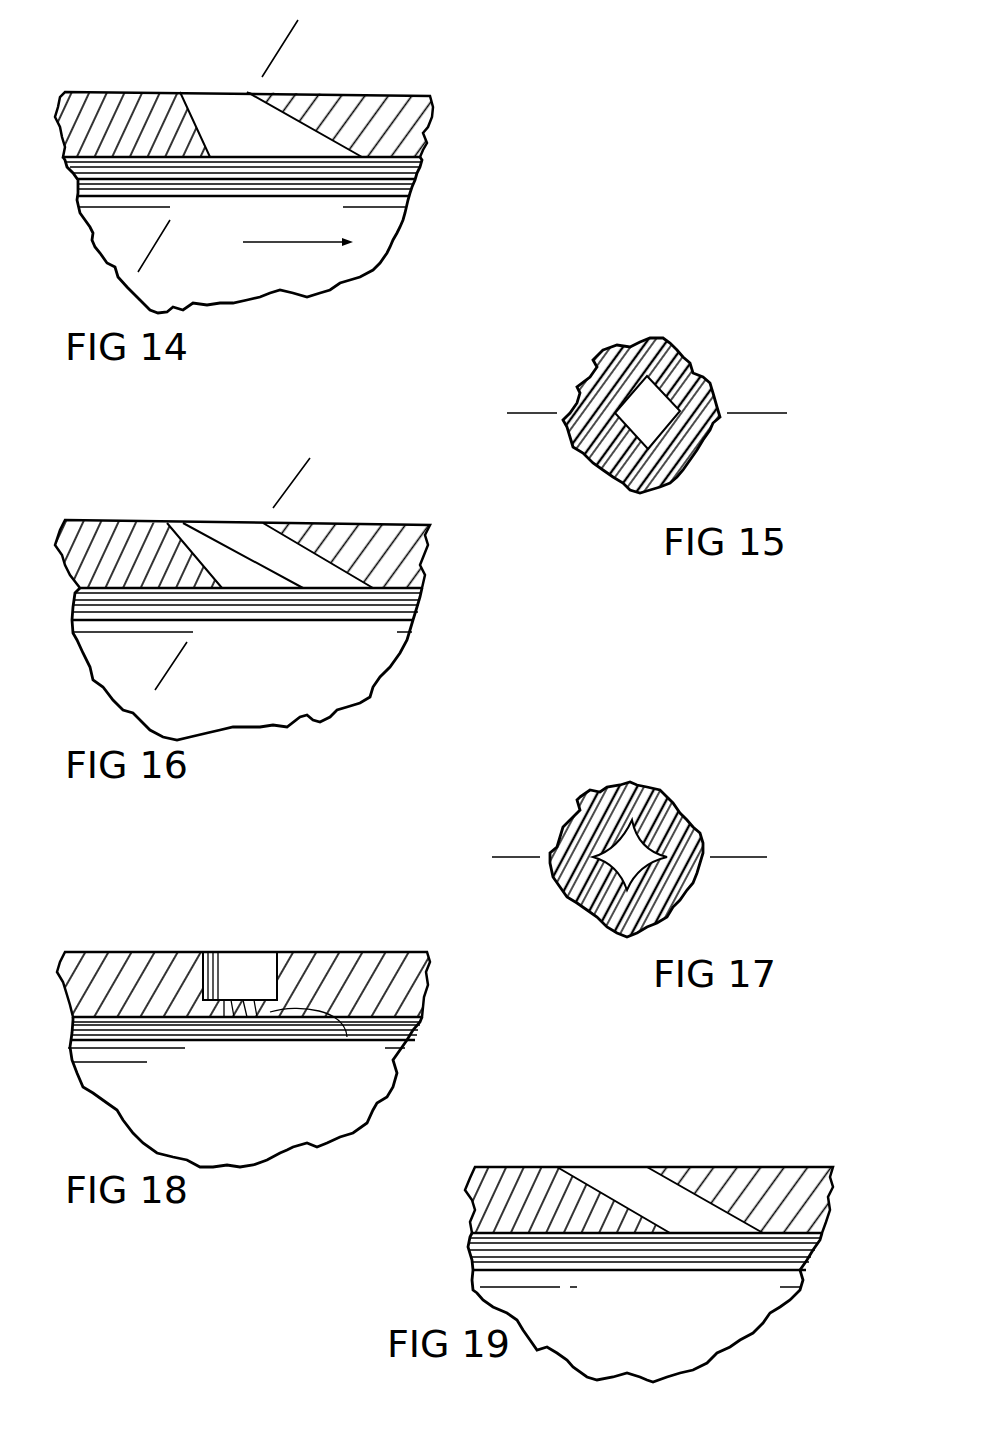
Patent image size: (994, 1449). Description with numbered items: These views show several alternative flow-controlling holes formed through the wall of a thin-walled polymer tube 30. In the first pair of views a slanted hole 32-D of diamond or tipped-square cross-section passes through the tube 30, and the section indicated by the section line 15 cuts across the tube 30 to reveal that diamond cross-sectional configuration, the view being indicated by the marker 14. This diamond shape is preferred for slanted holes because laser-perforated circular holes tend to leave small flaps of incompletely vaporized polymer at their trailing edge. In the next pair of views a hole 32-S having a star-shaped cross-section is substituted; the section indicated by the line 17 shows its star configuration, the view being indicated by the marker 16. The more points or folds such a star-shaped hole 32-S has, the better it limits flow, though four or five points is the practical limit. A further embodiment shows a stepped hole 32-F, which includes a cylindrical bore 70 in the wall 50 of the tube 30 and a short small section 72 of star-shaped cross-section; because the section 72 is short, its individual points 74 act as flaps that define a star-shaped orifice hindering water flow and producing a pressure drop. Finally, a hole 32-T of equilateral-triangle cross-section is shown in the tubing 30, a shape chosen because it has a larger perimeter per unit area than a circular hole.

In FIG. 14, the tube 30 is at (402, 57).
In FIG. 15, the tube 30 is at (790, 338).
In FIG. 16, the tube 30 is at (332, 483).
In FIG. 17, the tube 30 is at (778, 820).
In FIG. 18, the tube 30 is at (407, 927).
In FIG. 19, the tube 30 is at (823, 1132).
In FIG. 14, the wall 50 is at (427, 133).
In FIG. 15, the wall 50 is at (682, 340).
In FIG. 16, the wall 50 is at (423, 572).
In FIG. 17, the wall 50 is at (623, 783).
In FIG. 18, the wall 50 is at (423, 1008).
In FIG. 19, the wall 50 is at (837, 1197).
In FIG. 14, the hole of diamond type cross-sectional configuration 32-D is at (220, 90).
In FIG. 15, the hole of diamond type cross-sectional configuration 32-D is at (657, 428).
In FIG. 16, the hole of star shaped cross-sectional configuration 32-S is at (235, 520).
In FIG. 17, the hole of star shaped cross-sectional configuration 32-S is at (655, 868).
In FIG. 18, the stepped hole 32-F is at (210, 952).
In FIG. 19, the hole of triangular cross-sectional configuration 32-T is at (583, 1167).
In FIG. 18, the cylindrical bore 70 is at (252, 988).
In FIG. 18, the small section 72 is at (347, 1037).
In FIG. 18, the points 74 is at (238, 1003).
In FIG. 15, the section line 14- 14 is at (538, 418).
In FIG. 14, the section line 15- 15 is at (265, 44).
In FIG. 17, the section line 16- 16 is at (522, 863).
In FIG. 16, the section line 17- 17 is at (285, 469).